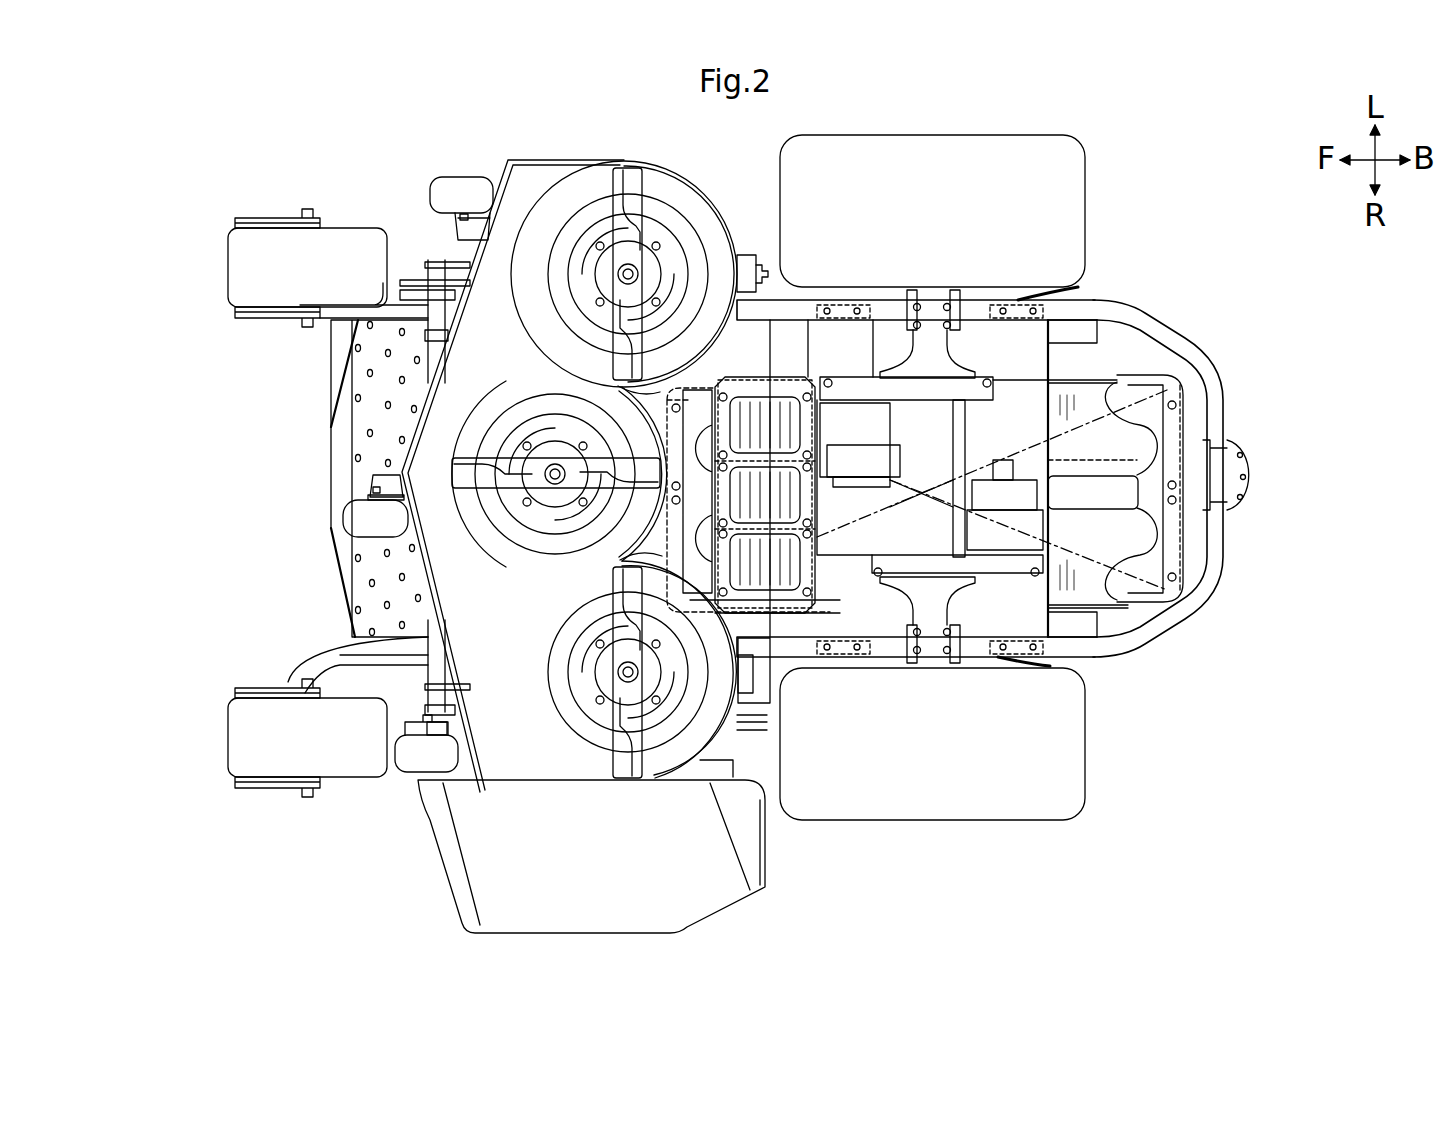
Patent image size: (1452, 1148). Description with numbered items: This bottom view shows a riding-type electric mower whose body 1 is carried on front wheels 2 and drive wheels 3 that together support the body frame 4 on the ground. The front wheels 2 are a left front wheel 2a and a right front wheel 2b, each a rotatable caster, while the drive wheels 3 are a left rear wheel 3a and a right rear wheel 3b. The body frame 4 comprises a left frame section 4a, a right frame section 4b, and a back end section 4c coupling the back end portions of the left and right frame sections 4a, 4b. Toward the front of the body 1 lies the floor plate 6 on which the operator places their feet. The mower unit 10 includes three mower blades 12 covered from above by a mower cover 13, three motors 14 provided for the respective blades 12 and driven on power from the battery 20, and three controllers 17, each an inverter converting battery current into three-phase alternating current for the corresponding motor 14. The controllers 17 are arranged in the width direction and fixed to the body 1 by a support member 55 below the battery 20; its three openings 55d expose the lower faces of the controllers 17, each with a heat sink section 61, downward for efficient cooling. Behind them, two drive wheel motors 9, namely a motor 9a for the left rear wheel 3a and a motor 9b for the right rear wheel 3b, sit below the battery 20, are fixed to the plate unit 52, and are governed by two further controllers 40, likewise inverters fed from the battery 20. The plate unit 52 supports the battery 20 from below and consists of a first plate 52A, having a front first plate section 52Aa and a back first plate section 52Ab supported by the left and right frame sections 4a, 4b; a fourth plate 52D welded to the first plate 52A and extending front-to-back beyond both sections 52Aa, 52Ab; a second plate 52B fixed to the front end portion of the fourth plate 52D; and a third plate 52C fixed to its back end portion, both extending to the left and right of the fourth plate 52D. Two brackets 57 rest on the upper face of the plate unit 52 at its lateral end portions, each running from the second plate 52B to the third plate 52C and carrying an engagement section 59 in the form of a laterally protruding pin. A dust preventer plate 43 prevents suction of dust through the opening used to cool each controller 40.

The body 1 is at (1215, 735).
The front wheels 2 is at (280, 503).
The left front wheel 2a is at (246, 256).
The right front wheel 2b is at (246, 750).
The drive wheels 3 is at (991, 479).
The left rear wheel 3a is at (1084, 156).
The right rear wheel 3b is at (1084, 797).
The body frame 4 is at (1152, 306).
The left frame section 4a is at (775, 305).
The right frame section 4b is at (960, 660).
The back end section 4c is at (1220, 415).
The floor plate 6 is at (387, 427).
The drive wheel motors 9 is at (944, 484).
The motor 9a is at (905, 380).
The motor 9b is at (962, 585).
The mower unit 10 is at (535, 146).
The mower blades 12 is at (630, 185).
The mower cover 13 is at (580, 155).
The motors 14 is at (603, 277).
The controllers 17 is at (800, 431).
The battery 20 is at (1087, 392).
The controllers 40 is at (1085, 330).
The dust preventer plate 43 is at (1046, 297).
The plate unit 52 is at (1160, 377).
The first plate 52A is at (920, 487).
The front first plate section 52Aa is at (792, 602).
The back first plate section 52Ab is at (985, 378).
The second plate 52B is at (660, 545).
The third plate 52C is at (1188, 474).
The fourth plate 52D is at (1077, 470).
The support member 55 is at (800, 393).
The openings 55d is at (756, 400).
The brackets 57 is at (1105, 688).
The engagement section 59 is at (760, 385).
The heat sink section 61 is at (795, 546).